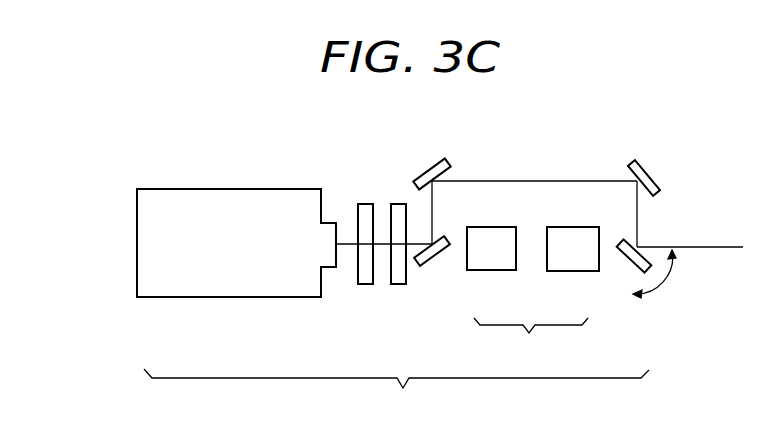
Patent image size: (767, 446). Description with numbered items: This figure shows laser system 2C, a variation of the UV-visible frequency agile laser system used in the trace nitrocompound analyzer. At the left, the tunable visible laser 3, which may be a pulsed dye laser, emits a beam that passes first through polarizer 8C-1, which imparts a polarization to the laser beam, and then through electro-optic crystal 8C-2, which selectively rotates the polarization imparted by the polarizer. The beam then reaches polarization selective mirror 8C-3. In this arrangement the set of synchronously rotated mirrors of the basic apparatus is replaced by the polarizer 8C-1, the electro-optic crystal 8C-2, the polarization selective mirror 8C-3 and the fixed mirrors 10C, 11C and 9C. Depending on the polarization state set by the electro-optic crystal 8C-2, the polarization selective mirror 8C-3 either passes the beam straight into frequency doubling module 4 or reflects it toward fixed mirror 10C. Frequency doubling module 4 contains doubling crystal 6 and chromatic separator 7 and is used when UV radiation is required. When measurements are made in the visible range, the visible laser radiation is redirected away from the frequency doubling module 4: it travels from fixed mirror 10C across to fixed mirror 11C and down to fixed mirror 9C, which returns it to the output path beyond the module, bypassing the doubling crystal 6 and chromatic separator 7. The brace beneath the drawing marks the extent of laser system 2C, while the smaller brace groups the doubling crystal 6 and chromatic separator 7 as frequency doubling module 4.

The tunable visible laser 3 is at (187, 189).
The polarizer 8C-1 is at (358, 204).
The electro-optic crystal 8C-2 is at (396, 204).
The polarization selective mirror 8C-3 is at (430, 267).
The fixed mirror 10C is at (452, 165).
The fixed mirror 11C is at (655, 183).
The fixed mirror 9C is at (633, 271).
The doubling crystal 6 is at (493, 271).
The chromatic separator 7 is at (578, 272).
The frequency doubling module 4 is at (531, 341).
The laser system 2C is at (396, 396).